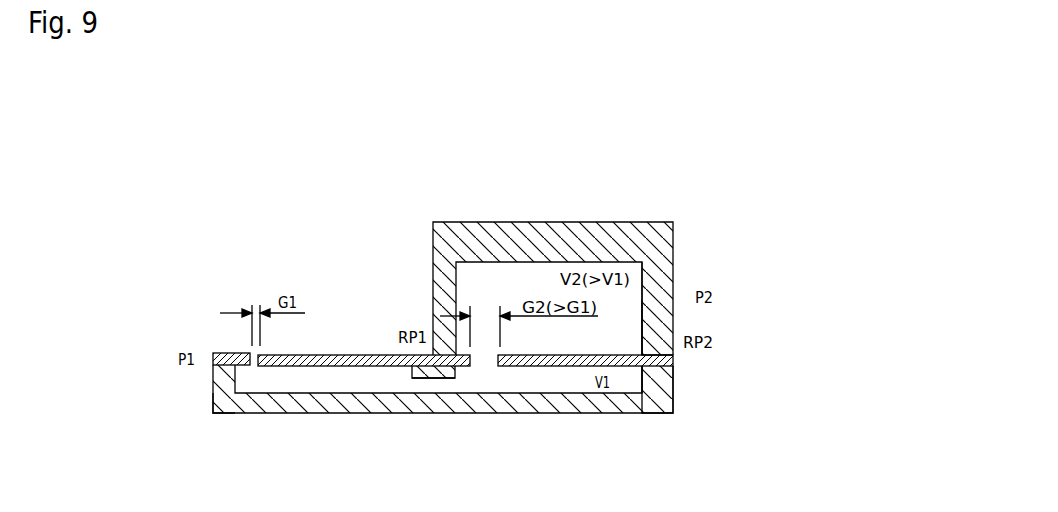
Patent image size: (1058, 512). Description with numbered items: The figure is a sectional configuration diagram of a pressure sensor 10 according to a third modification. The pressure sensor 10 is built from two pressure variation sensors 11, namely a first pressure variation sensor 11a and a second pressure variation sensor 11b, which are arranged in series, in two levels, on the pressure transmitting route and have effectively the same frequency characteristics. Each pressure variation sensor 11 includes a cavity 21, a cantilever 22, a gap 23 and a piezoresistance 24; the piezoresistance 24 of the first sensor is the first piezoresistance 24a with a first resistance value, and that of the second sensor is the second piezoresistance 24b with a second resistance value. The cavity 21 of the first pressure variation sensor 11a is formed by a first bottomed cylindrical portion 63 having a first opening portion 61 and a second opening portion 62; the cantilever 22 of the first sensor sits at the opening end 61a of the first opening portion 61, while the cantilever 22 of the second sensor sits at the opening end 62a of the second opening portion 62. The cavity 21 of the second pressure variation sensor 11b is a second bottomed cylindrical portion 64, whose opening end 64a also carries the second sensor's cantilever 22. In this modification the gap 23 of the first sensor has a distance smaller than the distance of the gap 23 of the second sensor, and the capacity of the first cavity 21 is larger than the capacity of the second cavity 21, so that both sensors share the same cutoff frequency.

The pressure sensor 10 is at (731, 197).
The pressure variation sensor 11 is at (440, 346).
The first pressure variation sensor 11a is at (405, 409).
The second pressure variation sensor 11b is at (595, 346).
The cavity 21 is at (510, 283).
The cantilever 22 is at (331, 366).
The gap 23 is at (252, 344).
The piezoresistance 24 is at (547, 310).
The first piezoresistance 24a is at (428, 352).
The second piezoresistance 24b is at (655, 360).
The first opening portion 61 is at (362, 378).
The opening end 61a is at (412, 369).
The second opening portion 62 is at (620, 378).
The opening end 62a is at (642, 382).
The first bottomed cylindrical portion 63 is at (227, 402).
The second bottomed cylindrical portion 64 is at (660, 313).
The opening end 64a is at (643, 352).